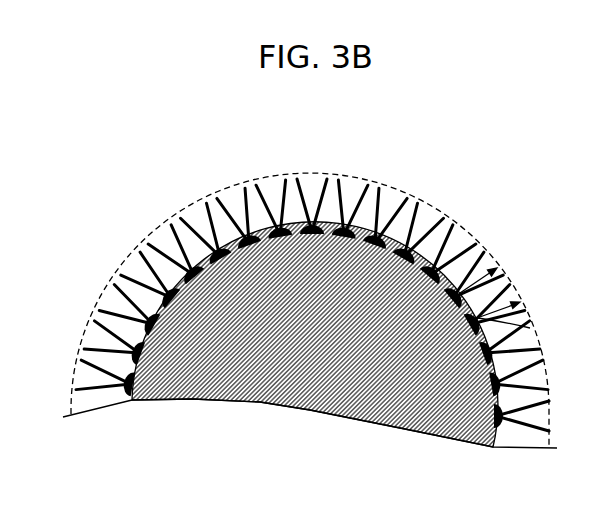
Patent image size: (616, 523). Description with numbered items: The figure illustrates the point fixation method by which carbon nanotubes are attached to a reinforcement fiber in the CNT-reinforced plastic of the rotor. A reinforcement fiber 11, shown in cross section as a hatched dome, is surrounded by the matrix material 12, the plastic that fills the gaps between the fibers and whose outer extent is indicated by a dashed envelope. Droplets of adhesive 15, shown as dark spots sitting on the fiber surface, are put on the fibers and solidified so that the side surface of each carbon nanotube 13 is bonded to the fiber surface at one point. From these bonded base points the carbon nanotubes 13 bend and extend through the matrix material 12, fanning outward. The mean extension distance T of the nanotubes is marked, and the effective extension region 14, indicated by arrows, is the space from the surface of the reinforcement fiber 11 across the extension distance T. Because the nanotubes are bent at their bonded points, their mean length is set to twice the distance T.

The reinforcement fiber 11 is at (250, 280).
The matrix material 12 is at (148, 253).
The carbon nanotube 13 is at (276, 195).
The effective extension region 14 is at (466, 282).
The adhesive 15 is at (342, 235).
The mean extension distance T is at (530, 328).